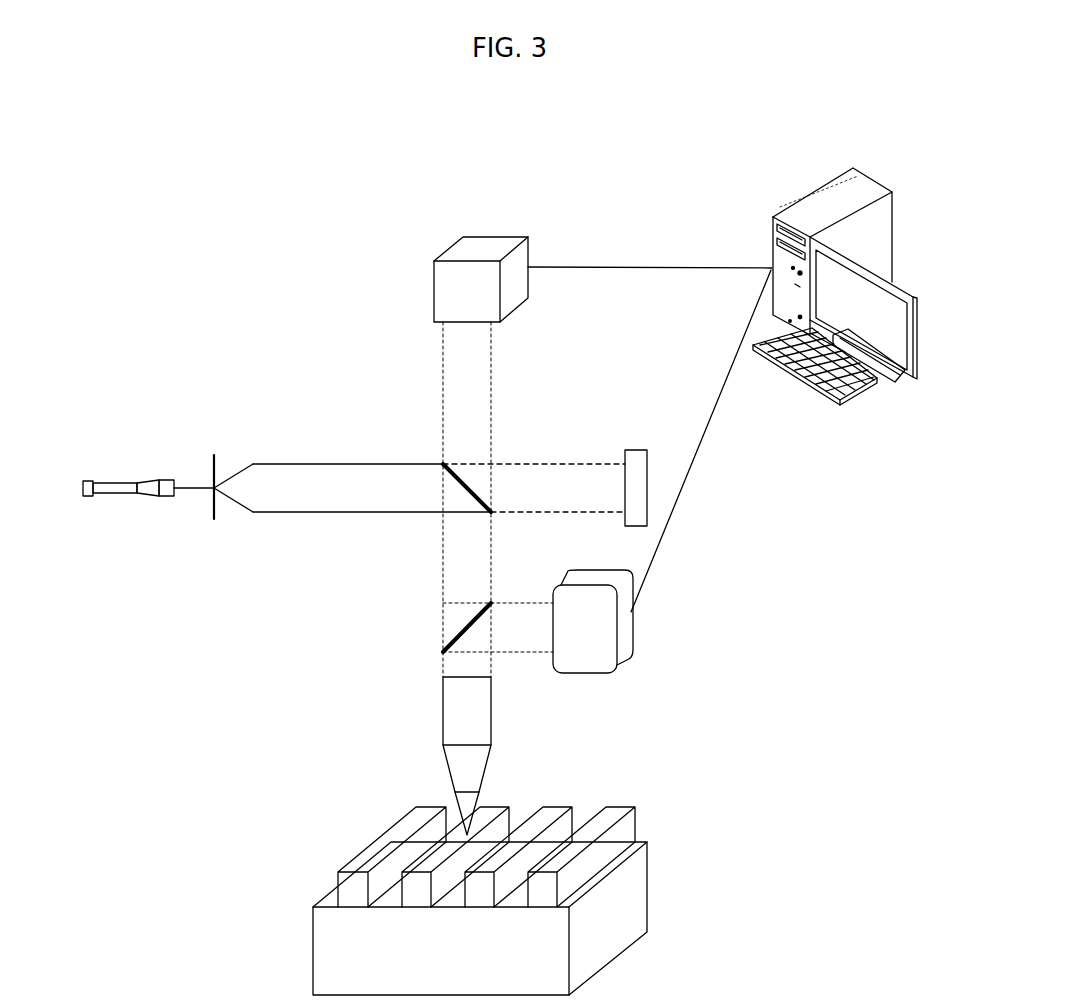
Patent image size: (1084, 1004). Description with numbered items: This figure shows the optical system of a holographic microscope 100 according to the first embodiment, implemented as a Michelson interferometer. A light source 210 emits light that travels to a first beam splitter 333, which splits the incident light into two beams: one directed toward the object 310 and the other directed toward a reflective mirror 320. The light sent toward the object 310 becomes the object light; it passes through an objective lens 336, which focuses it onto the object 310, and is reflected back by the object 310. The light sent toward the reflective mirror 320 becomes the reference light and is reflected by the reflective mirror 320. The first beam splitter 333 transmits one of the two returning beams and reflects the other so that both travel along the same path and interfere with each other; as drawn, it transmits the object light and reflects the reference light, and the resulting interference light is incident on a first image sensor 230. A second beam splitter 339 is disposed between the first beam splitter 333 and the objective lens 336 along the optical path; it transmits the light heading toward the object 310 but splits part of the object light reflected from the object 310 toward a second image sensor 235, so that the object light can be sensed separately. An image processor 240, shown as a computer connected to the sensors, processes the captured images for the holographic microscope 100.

The holographic microscope 100 is at (192, 204).
The light source 210 is at (115, 481).
The first image sensor 230 is at (479, 237).
The image processor 240 is at (818, 192).
The second image sensor 235 is at (617, 627).
The reflective mirror 320 is at (634, 450).
The first beam splitter 333 is at (443, 513).
The second beam splitter 339 is at (443, 636).
The objective lens 336 is at (443, 717).
The object 310 is at (648, 895).